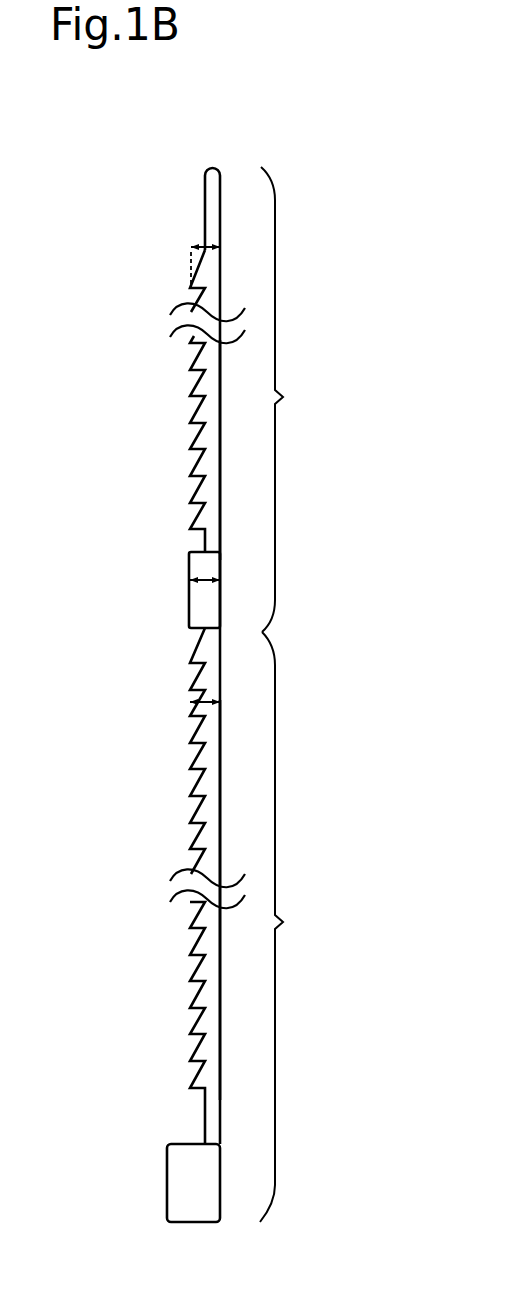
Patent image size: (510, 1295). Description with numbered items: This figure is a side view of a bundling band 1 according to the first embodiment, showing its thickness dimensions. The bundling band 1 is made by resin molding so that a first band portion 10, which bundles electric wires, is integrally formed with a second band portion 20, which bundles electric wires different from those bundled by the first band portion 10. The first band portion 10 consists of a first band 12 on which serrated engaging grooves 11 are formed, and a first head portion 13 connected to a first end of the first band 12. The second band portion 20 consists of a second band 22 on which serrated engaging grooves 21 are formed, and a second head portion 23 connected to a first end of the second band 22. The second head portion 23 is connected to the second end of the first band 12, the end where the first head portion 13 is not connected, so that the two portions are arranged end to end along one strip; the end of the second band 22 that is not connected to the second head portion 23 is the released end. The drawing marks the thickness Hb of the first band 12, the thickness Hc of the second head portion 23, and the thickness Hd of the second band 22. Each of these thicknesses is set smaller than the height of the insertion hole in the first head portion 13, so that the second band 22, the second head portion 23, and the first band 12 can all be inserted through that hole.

The bundling band 1 is at (122, 327).
The first band portion 10 is at (241, 925).
The engaging grooves 11 is at (193, 839).
The first band 12 is at (204, 810).
The first head portion 13 is at (203, 1193).
The second band portion 20 is at (232, 399).
The engaging grooves 21 is at (196, 462).
The second band 22 is at (204, 364).
The second head portion 23 is at (204, 604).
The thickness of the second band Hd is at (197, 243).
The thickness of the second head portion Hc is at (198, 577).
The thickness of the first band Hb is at (195, 700).